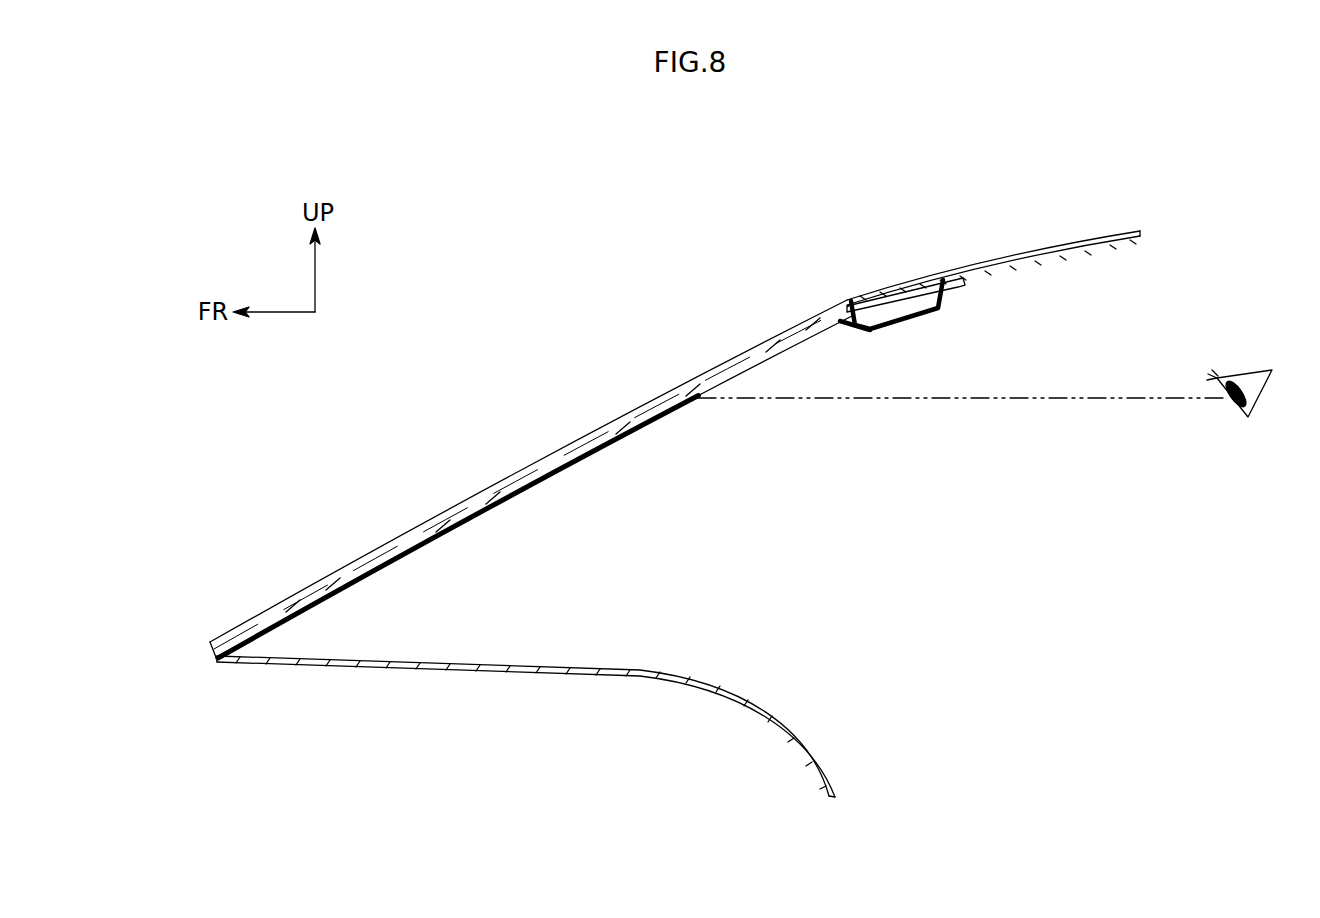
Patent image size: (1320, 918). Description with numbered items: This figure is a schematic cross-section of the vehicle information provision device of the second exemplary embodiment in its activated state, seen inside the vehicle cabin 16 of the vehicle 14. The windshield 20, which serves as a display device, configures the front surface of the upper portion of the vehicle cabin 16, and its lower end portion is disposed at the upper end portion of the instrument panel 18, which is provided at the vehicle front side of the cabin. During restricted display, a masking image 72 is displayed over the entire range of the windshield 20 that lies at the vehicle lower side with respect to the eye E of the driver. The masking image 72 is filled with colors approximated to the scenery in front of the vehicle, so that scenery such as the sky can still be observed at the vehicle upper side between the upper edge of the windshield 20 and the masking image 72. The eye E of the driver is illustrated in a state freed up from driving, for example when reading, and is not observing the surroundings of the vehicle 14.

The vehicle 14 is at (850, 187).
The vehicle cabin 16 is at (1037, 705).
The instrument panel 18 is at (637, 672).
The windshield 20 is at (794, 328).
The masking image 72 is at (523, 488).
The eye of the driver E is at (1241, 372).